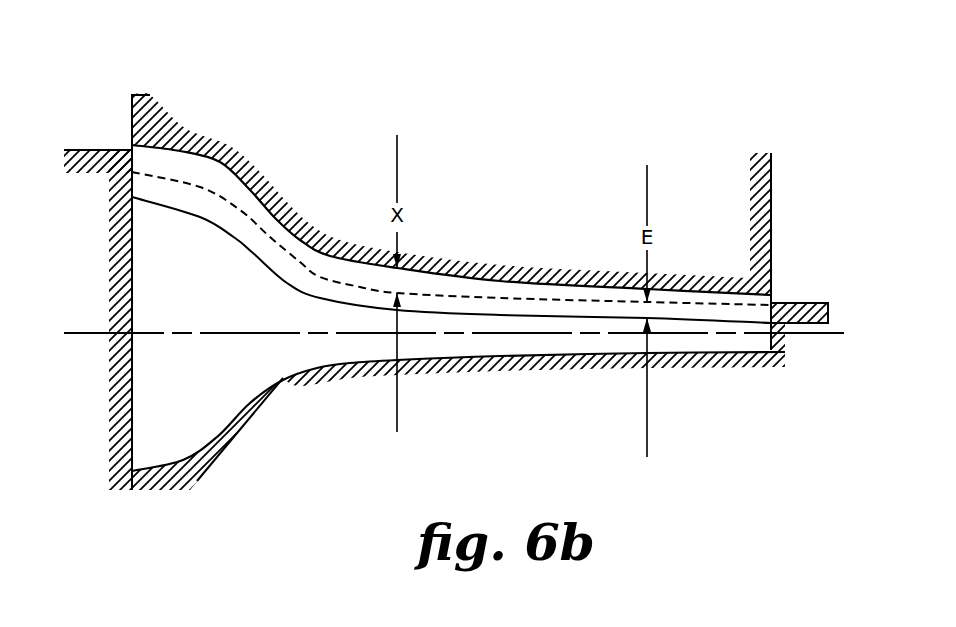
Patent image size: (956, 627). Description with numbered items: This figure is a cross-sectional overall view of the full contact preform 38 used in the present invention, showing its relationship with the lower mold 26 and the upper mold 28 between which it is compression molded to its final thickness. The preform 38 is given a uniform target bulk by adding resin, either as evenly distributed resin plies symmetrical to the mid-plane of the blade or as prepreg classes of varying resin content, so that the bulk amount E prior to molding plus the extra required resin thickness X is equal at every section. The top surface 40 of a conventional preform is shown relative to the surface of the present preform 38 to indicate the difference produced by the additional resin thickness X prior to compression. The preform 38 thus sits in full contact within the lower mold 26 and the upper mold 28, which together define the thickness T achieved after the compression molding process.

The surface of preform 40 is at (218, 191).
The preform 38 is at (152, 383).
The lower mold 26 is at (180, 477).
The upper mold 28 is at (765, 182).